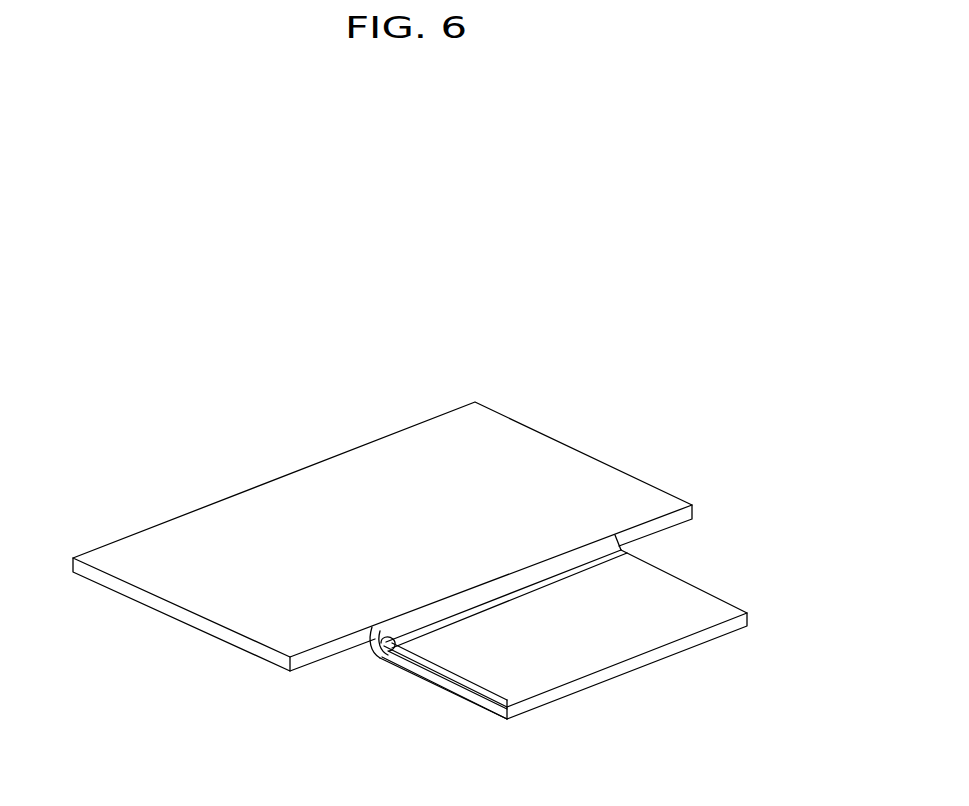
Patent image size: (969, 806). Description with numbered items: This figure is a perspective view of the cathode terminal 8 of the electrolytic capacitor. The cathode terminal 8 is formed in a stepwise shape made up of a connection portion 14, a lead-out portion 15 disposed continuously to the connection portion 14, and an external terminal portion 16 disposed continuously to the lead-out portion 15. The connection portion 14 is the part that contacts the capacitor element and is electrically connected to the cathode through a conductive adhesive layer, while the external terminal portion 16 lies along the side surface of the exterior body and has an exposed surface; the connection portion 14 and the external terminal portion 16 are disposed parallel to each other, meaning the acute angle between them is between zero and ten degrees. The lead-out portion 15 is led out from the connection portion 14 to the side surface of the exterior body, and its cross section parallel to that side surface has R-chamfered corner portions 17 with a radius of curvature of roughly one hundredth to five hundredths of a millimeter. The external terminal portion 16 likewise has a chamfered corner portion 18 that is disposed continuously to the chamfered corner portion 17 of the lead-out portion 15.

The cathode terminal 8 is at (537, 386).
The connection portion 14 is at (358, 470).
The lead-out portion 15 is at (594, 549).
The external terminal portion 16 is at (677, 604).
The corner portion 17 is at (392, 666).
The corner portion 18 is at (468, 697).